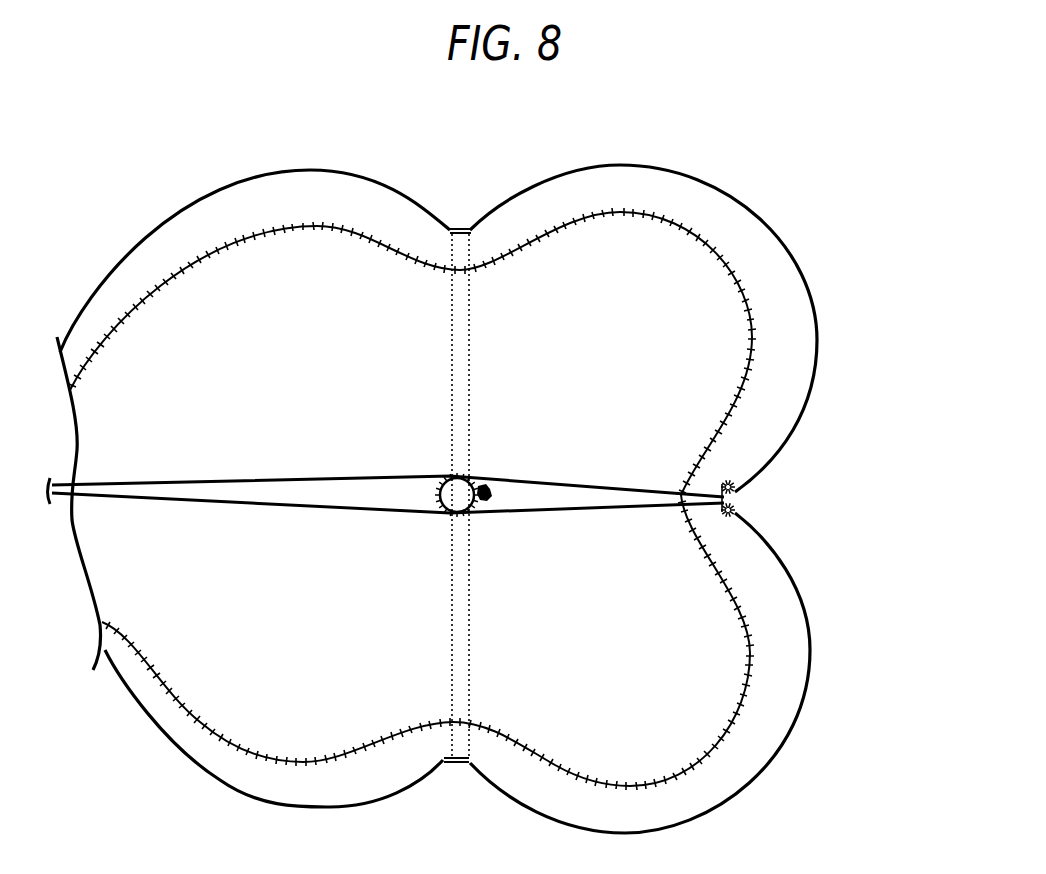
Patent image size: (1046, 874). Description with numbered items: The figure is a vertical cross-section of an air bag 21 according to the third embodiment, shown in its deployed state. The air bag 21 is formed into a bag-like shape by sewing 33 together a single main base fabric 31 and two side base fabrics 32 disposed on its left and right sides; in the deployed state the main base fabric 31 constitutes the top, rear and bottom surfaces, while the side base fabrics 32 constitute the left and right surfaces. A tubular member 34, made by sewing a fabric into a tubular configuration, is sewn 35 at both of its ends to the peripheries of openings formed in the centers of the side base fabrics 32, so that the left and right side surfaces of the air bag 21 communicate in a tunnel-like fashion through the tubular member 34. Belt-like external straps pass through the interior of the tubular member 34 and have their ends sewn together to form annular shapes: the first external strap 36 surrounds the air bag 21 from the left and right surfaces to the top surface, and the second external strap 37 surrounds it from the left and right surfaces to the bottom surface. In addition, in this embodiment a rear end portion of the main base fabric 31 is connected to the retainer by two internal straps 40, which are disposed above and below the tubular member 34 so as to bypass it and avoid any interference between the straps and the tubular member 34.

The air bag 21 is at (826, 254).
The main base fabric 31 is at (790, 393).
The side base fabric 32 is at (611, 396).
The sewing 33 is at (732, 276).
The tubular member 34 is at (447, 479).
The sewing 35 is at (481, 479).
The first external strap 36 is at (459, 228).
The second external strap 37 is at (455, 766).
The internal strap 40 is at (350, 475).